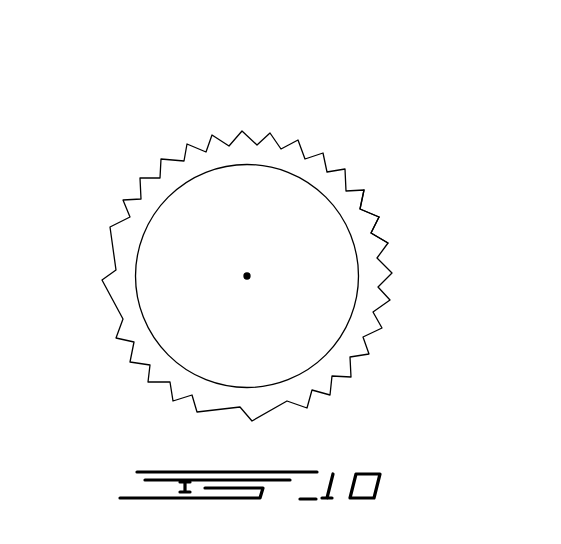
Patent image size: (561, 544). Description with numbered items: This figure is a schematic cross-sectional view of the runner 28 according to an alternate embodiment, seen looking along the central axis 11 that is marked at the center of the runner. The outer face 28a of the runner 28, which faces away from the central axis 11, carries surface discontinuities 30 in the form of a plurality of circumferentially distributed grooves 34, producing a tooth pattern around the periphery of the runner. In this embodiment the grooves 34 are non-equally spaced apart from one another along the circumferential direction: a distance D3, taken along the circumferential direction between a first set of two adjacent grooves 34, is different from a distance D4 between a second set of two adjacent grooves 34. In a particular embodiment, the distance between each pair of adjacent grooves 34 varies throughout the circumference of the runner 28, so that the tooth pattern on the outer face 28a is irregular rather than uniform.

The outer face 28a is at (295, 127).
The runner 28 is at (370, 293).
The grooves 34 is at (370, 202).
The surface discontinuities 30 is at (455, 172).
The central axis 11 is at (247, 282).
The distance between a first set of two adjacent grooves D3 is at (120, 182).
The distance between a second set of two adjacent grooves D4 is at (102, 213).